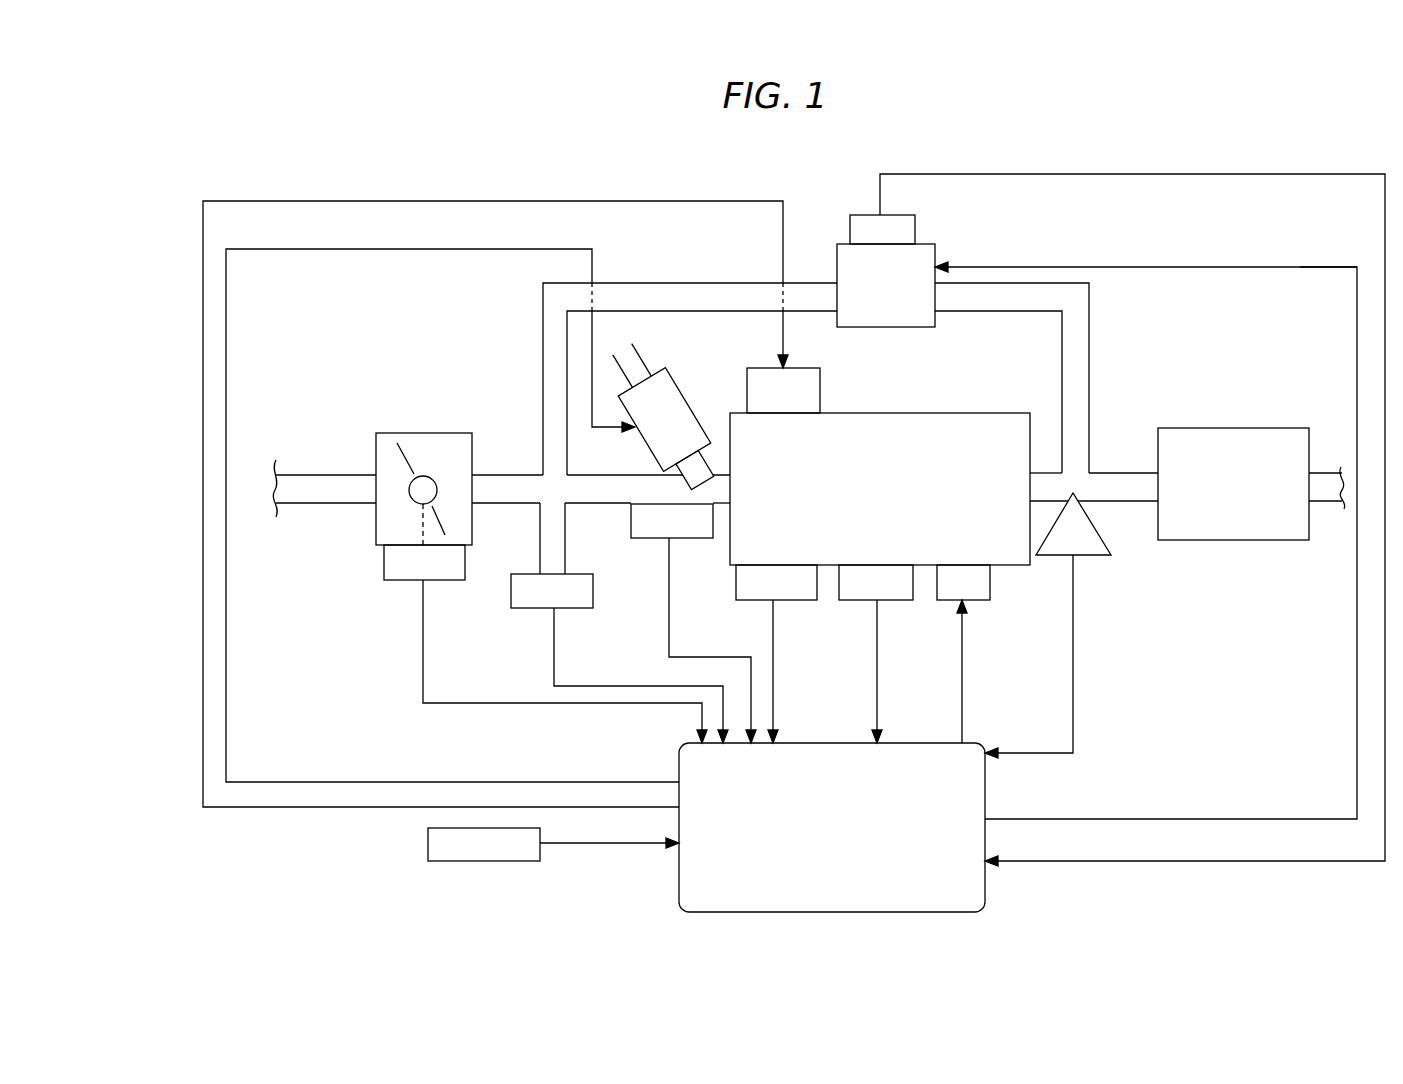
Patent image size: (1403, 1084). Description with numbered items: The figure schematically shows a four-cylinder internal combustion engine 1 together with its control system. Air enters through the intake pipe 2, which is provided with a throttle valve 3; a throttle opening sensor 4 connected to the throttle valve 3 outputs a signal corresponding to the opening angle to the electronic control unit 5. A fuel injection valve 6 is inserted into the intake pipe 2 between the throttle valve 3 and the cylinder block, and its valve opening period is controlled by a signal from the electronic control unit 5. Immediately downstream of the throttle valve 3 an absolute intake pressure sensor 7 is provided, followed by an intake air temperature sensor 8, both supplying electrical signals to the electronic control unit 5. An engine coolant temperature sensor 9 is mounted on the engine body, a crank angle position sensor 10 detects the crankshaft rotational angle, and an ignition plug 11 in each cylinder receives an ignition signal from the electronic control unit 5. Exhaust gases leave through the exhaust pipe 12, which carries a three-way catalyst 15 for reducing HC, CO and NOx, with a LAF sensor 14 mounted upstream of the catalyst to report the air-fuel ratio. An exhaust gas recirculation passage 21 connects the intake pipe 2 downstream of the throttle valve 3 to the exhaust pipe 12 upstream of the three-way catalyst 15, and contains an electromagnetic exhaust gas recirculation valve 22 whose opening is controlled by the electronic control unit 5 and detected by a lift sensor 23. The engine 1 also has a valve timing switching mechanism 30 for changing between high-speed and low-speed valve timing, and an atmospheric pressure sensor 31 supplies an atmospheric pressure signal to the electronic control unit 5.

The engine 1 is at (970, 413).
The intake pipe 2 is at (495, 505).
The throttle valve 3 is at (397, 455).
The throttle opening sensor 4 is at (452, 580).
The electronic control unit 5 is at (942, 742).
The fuel injection valve 6 is at (686, 395).
The absolute intake pressure sensor 7 is at (575, 608).
The intake air temperature sensor 8 is at (698, 538).
The engine coolant temperature sensor 9 is at (803, 600).
The crank angle position sensor 10 is at (900, 600).
The ignition plug 11 is at (973, 600).
The exhaust pipe 12 is at (1130, 472).
The LAF sensor 14 is at (1103, 555).
The three-way catalyst 15 is at (1225, 540).
The exhaust gas recirculation passage 21 is at (1052, 281).
The exhaust gas recirculation valve 22 is at (920, 327).
The lift sensor 23 is at (915, 225).
The valve timing switching mechanism 30 is at (820, 388).
The atmospheric pressure sensor 31 is at (428, 842).